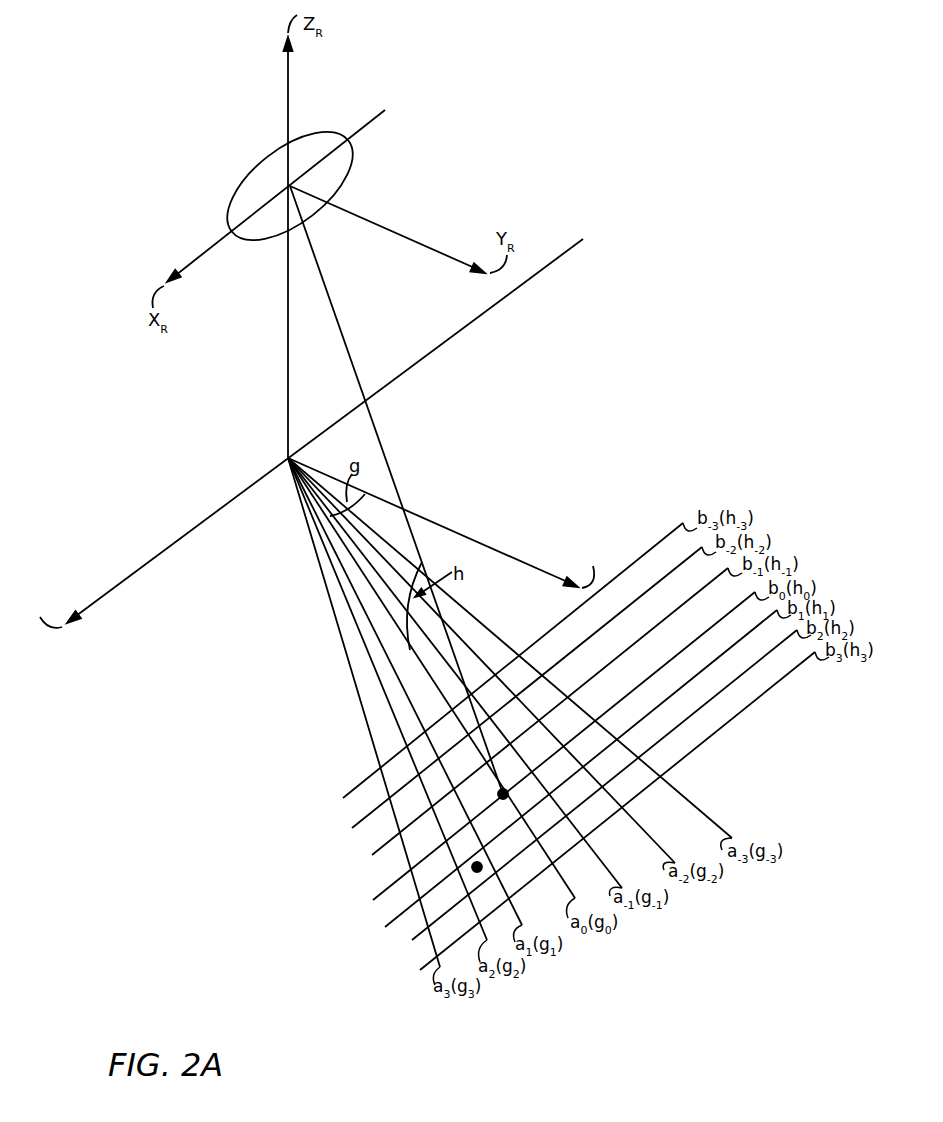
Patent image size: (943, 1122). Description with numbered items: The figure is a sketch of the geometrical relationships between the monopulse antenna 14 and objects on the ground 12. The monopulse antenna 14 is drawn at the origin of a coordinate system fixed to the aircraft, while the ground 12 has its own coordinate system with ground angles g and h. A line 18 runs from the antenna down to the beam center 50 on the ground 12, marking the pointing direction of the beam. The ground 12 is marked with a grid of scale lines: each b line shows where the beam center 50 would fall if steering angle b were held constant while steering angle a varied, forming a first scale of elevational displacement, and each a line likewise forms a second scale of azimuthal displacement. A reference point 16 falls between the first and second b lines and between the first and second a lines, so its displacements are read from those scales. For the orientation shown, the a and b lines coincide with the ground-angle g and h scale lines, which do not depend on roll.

The ground 12 is at (252, 571).
The monopulse antenna 14 is at (312, 132).
The reference point 16 is at (481, 863).
The beam axis line 18 is at (390, 472).
The beam center 50 is at (504, 789).